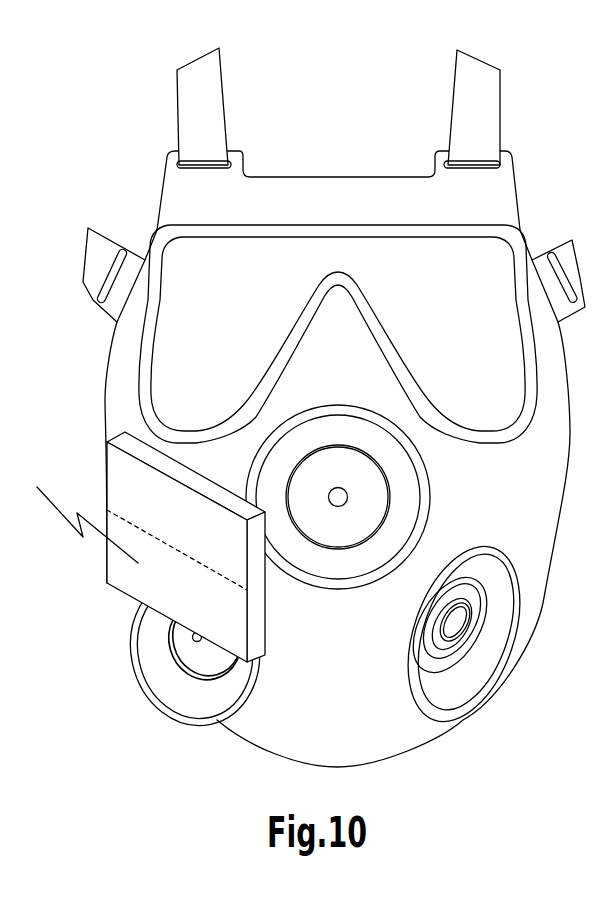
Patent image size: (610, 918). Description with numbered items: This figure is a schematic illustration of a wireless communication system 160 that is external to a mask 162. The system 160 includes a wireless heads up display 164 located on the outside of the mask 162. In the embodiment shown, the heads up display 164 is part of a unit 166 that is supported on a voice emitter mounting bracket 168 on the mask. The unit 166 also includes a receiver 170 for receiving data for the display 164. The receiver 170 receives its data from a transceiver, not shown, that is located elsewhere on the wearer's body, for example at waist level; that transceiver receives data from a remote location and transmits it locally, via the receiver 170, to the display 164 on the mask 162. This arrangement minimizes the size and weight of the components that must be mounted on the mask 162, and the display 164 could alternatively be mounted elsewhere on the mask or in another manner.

The communication system 160 is at (292, 424).
The mask 162 is at (407, 753).
The wireless heads up display 164 is at (179, 533).
The unit 166 is at (92, 574).
The voice emitter mounting bracket 168 is at (243, 693).
The receiver 170 is at (235, 622).